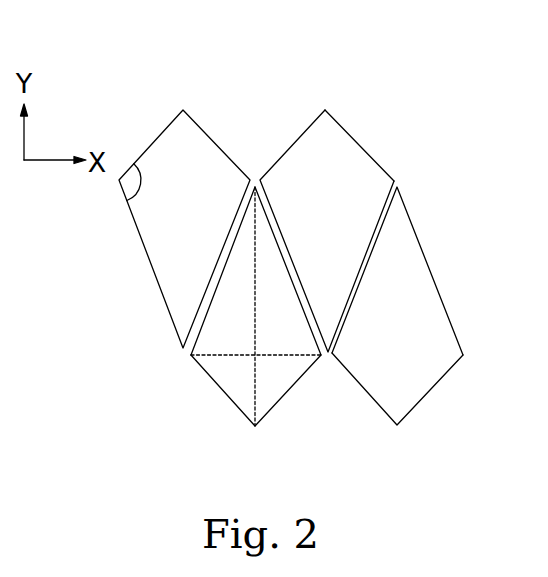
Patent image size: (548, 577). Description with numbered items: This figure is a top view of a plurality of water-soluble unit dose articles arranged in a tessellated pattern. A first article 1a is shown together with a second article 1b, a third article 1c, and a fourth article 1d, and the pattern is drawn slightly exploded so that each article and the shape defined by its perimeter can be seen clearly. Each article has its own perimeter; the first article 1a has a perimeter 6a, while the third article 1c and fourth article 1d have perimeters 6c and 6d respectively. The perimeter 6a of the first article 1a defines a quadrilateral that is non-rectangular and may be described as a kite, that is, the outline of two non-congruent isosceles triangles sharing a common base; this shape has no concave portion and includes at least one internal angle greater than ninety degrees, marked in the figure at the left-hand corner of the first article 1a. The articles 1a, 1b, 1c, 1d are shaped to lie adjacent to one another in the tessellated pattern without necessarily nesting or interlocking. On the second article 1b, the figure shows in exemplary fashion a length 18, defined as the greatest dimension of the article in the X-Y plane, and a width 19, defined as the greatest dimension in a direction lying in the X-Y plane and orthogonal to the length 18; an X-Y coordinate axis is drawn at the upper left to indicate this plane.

The first article 1a is at (207, 157).
The second article 1b is at (272, 388).
The third article 1c is at (337, 157).
The fourth article 1d is at (417, 370).
The perimeter 6a is at (151, 268).
The perimeter 6c is at (381, 167).
The perimeter 6d is at (431, 270).
The length 18 is at (252, 392).
The width 19 is at (213, 357).